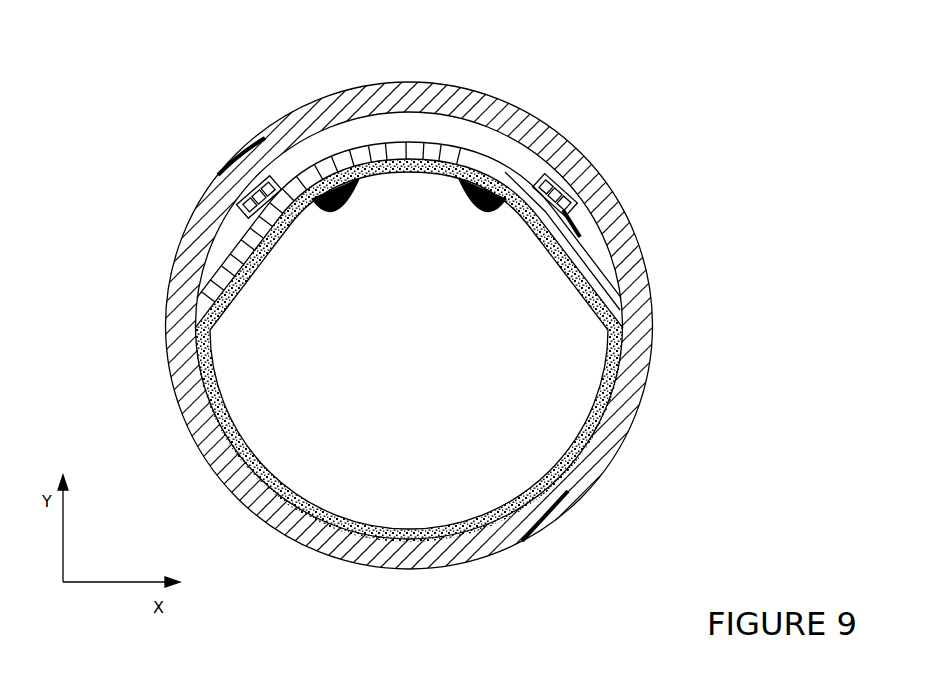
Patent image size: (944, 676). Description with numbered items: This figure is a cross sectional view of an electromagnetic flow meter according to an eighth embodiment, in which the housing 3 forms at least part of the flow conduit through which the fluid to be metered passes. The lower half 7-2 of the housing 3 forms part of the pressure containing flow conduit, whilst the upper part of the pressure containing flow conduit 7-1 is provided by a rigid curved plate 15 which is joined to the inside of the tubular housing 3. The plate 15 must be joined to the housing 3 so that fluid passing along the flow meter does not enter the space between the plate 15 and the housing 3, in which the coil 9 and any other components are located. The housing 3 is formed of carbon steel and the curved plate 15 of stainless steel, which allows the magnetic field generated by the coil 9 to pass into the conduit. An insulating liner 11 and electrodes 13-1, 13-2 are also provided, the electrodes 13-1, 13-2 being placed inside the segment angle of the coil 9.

The housing 3 is at (520, 108).
The upper part of the pressure containing flow conduit 7-1 is at (412, 141).
The lower half of the housing 7-2 is at (553, 518).
The coil 9 is at (252, 180).
The insulating liner 11 is at (285, 483).
The electrode 13-1 is at (334, 209).
The electrode 13-2 is at (467, 207).
The rigid curved plate 15 is at (587, 250).